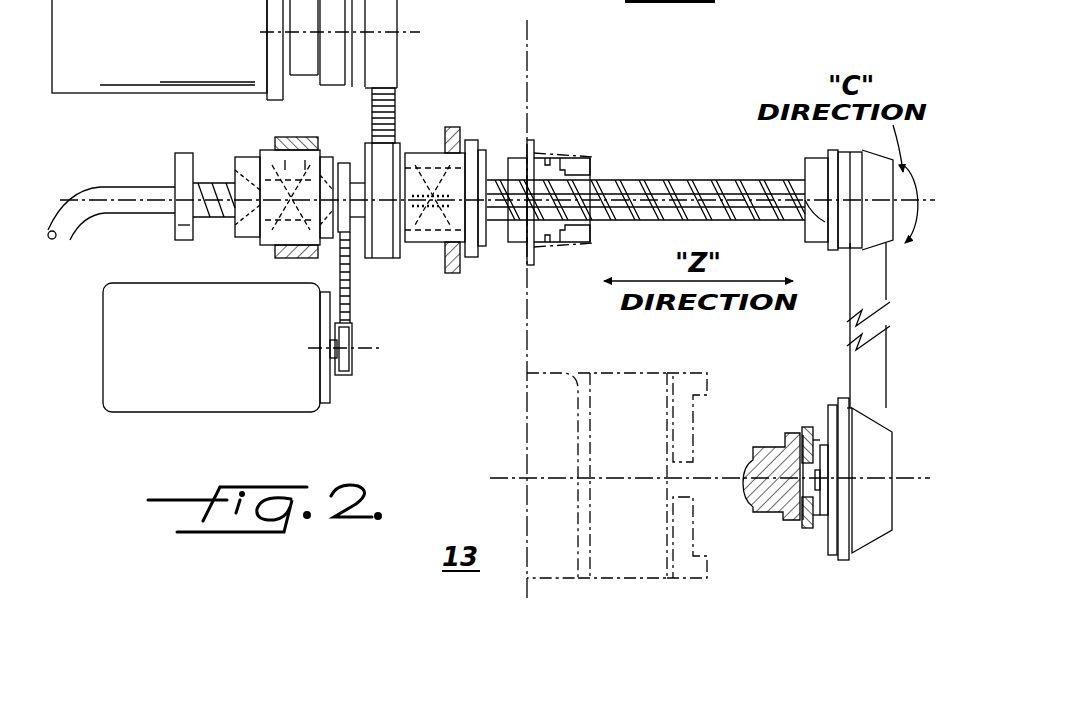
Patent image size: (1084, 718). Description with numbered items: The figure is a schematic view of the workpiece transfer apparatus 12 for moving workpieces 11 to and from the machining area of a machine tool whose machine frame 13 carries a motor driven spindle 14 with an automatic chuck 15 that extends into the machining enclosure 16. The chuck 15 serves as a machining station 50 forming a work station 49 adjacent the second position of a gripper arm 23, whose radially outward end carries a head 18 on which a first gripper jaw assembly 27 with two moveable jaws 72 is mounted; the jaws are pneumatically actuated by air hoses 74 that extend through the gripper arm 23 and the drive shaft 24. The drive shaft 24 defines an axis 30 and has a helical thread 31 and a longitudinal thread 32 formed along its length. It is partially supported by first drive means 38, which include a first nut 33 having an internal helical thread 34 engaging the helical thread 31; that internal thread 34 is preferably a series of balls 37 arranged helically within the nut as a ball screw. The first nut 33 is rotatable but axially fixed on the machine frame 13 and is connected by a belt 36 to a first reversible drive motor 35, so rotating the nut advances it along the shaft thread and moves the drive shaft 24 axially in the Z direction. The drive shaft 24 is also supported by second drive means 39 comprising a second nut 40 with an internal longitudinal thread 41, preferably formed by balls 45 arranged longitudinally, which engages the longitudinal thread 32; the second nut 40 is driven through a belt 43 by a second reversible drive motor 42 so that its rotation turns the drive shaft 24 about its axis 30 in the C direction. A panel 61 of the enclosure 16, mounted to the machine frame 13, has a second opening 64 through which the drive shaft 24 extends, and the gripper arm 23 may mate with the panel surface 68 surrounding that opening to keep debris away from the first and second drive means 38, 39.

The workpiece 11 is at (750, 458).
The workpiece transfer apparatus 12 is at (645, 135).
The machine frame 13 is at (290, 262).
The spindle 14 is at (585, 372).
The chuck 15 is at (688, 378).
The machining enclosure 16 is at (732, 355).
The head 18 is at (880, 533).
The gripper arm 23 is at (848, 352).
The drive shaft 24 is at (712, 185).
The first gripper jaw assembly 27 is at (822, 412).
The axis 30 is at (820, 225).
The helical thread 31 is at (790, 178).
The longitudinal thread 32 is at (200, 175).
The first nut 33 is at (288, 137).
The internal helical thread 34 is at (322, 150).
The first reversible drive motor 35 is at (216, 363).
The belt 36 is at (350, 298).
The balls 37 is at (255, 243).
The first drive means 38 is at (246, 150).
The second drive means 39 is at (492, 250).
The second nut 40 is at (440, 152).
The internal longitudinal thread 41 is at (435, 135).
The second reversible drive motor 42 is at (180, 41).
The belt 43 is at (392, 103).
The balls 45 is at (445, 262).
The work station 49 is at (772, 550).
The machining station 50 is at (628, 575).
The panel 61 is at (527, 62).
The second opening 64 is at (560, 150).
The panel surface 68 is at (540, 140).
The moveable jaws 72 is at (802, 432).
The air hoses 74 is at (67, 220).